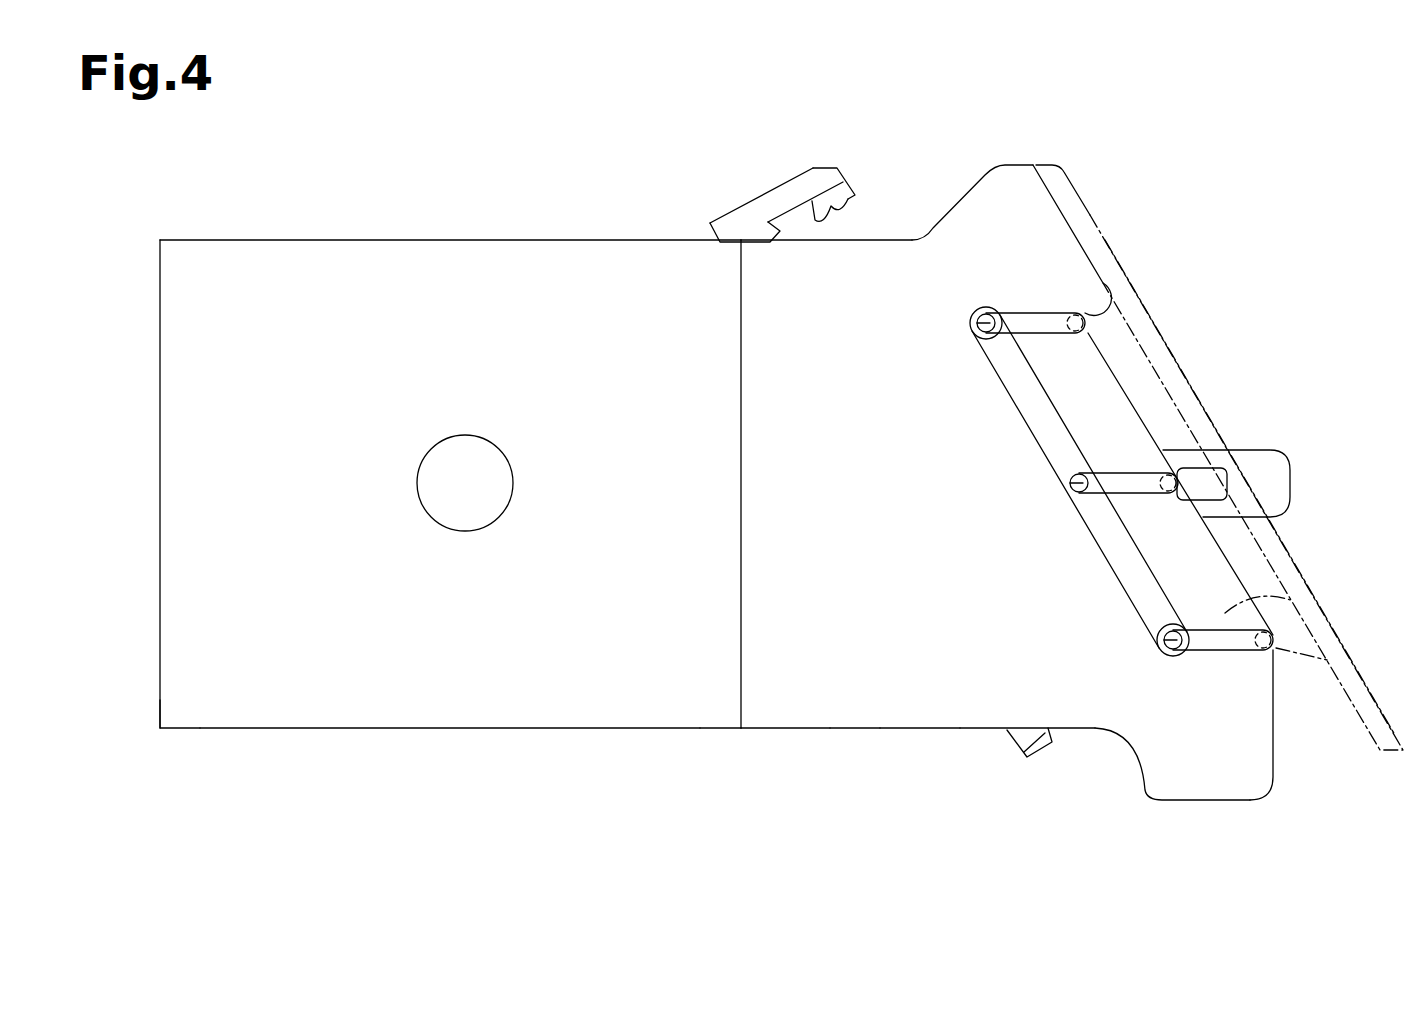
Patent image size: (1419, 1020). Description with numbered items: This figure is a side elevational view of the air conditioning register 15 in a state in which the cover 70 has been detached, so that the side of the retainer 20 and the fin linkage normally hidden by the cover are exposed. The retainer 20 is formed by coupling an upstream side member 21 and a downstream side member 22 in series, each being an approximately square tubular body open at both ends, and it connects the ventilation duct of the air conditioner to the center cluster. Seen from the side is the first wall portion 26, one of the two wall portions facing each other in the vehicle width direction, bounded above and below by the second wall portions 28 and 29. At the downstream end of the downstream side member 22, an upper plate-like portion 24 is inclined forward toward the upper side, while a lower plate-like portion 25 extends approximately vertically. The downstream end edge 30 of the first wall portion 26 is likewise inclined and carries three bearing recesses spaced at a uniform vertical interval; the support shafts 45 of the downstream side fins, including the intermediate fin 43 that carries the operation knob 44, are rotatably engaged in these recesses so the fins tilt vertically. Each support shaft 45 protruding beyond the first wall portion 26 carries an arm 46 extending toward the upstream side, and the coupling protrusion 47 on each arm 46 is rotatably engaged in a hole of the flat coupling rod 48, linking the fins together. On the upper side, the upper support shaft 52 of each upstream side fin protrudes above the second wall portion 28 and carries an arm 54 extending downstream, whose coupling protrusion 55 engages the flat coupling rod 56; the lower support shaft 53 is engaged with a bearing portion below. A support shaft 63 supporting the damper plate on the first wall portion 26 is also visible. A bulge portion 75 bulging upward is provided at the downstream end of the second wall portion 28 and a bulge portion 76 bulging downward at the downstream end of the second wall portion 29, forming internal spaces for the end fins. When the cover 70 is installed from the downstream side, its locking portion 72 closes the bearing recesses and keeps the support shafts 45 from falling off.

The air conditioning register 15 is at (282, 217).
The retainer 20 is at (700, 786).
The upstream side member 21 is at (715, 729).
The downstream side member 22 is at (826, 729).
The plate-like portion 24 is at (1072, 215).
The plate-like portion 25 is at (1275, 740).
The first wall portion 26 is at (177, 312).
The second wall portion 28 is at (203, 239).
The second wall portion 29 is at (168, 729).
The downstream end edge 30 is at (1132, 386).
The intermediate fin 43 is at (1200, 470).
The operation knob 44 is at (1285, 485).
The support shaft 45 is at (1072, 318).
The arm 46 is at (1022, 313).
The coupling protrusion 47 is at (972, 323).
The coupling rod 48 is at (1113, 572).
The support shaft 52 is at (708, 226).
The support shaft 53 is at (1008, 742).
The arm 54 is at (776, 198).
The coupling protrusion 55 is at (858, 200).
The coupling rod 56 is at (848, 190).
The support shaft 63 is at (437, 516).
The cover 70 is at (1125, 266).
The locking portion 72 is at (1262, 600).
The bulge portion 75 is at (948, 212).
The bulge portion 76 is at (1155, 792).